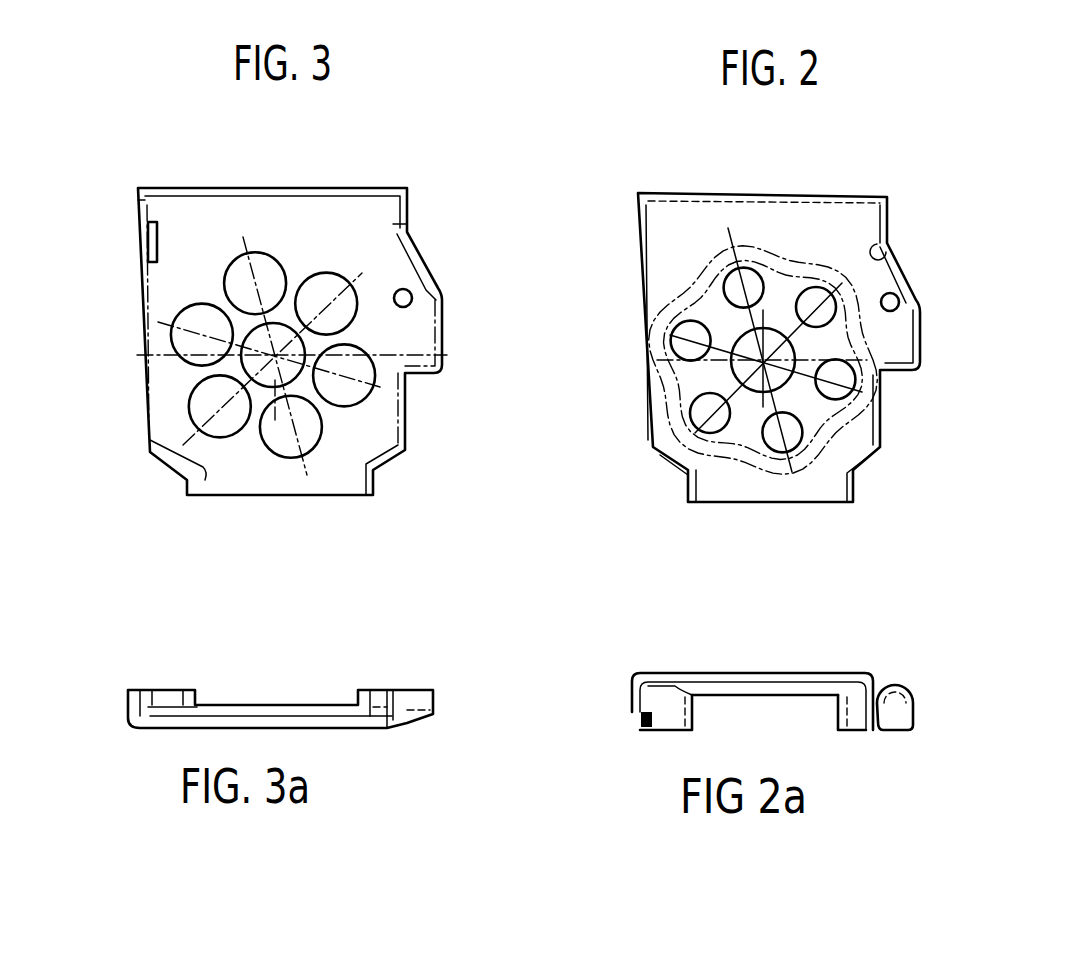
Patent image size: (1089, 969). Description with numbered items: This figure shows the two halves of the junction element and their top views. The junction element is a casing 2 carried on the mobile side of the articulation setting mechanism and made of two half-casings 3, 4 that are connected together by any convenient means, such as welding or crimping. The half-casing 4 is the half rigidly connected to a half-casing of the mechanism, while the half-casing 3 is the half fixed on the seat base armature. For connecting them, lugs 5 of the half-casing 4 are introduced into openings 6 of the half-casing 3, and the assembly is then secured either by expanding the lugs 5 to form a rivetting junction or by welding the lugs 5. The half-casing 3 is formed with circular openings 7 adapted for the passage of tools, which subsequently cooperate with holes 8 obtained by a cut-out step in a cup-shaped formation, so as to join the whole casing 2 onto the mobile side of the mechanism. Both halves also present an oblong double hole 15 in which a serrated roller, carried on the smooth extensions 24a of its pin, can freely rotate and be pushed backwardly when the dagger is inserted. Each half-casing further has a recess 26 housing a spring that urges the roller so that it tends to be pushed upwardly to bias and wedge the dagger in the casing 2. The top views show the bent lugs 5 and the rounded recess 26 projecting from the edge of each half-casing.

In FIG. 3, the casing 2 is at (331, 299).
In FIG. 2, the casing 2 is at (833, 317).
In FIG. 3, the half-casing 3 is at (295, 222).
In FIG. 3A, the half-casing 3 is at (300, 700).
In FIG. 2, the half-casing 4 is at (792, 227).
In FIG. 2A, the half-casing 4 is at (807, 675).
In FIG. 2, the lugs 5 is at (640, 247).
In FIG. 2A, the lugs 5 is at (667, 724).
In FIG. 3, the openings 6 is at (156, 222).
In FIG. 2A, the openings 6 is at (632, 697).
In FIG. 3, the circular openings 7 is at (230, 253).
In FIG. 2, the holes 8 is at (752, 270).
In FIG. 3, the oblong double hole 15 is at (412, 296).
In FIG. 2, the oblong double hole 15 is at (900, 300).
In FIG. 2, the smooth extensions 24a is at (887, 238).
In FIG. 3, the recess 26 is at (413, 345).
In FIG. 2, the recess 26 is at (913, 372).
In FIG. 3A, the recess 26 is at (413, 698).
In FIG. 2A, the recess 26 is at (908, 690).